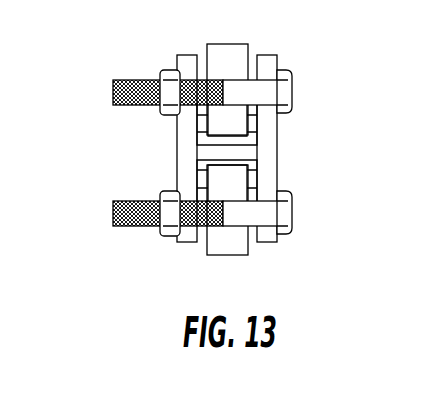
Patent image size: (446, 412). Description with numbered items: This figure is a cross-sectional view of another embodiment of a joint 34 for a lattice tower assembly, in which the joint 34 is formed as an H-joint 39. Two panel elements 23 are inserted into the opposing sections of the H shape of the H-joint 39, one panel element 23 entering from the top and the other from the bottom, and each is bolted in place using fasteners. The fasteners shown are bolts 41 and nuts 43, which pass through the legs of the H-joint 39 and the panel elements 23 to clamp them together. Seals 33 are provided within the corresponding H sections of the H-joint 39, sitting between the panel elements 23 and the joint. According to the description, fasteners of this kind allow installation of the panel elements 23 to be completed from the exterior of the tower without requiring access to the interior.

The panel element 23 is at (234, 53).
The seal 33 is at (250, 178).
The joint 34 is at (267, 134).
The H-joint 39 is at (188, 141).
The bolt 41 is at (140, 227).
The nut 43 is at (283, 215).